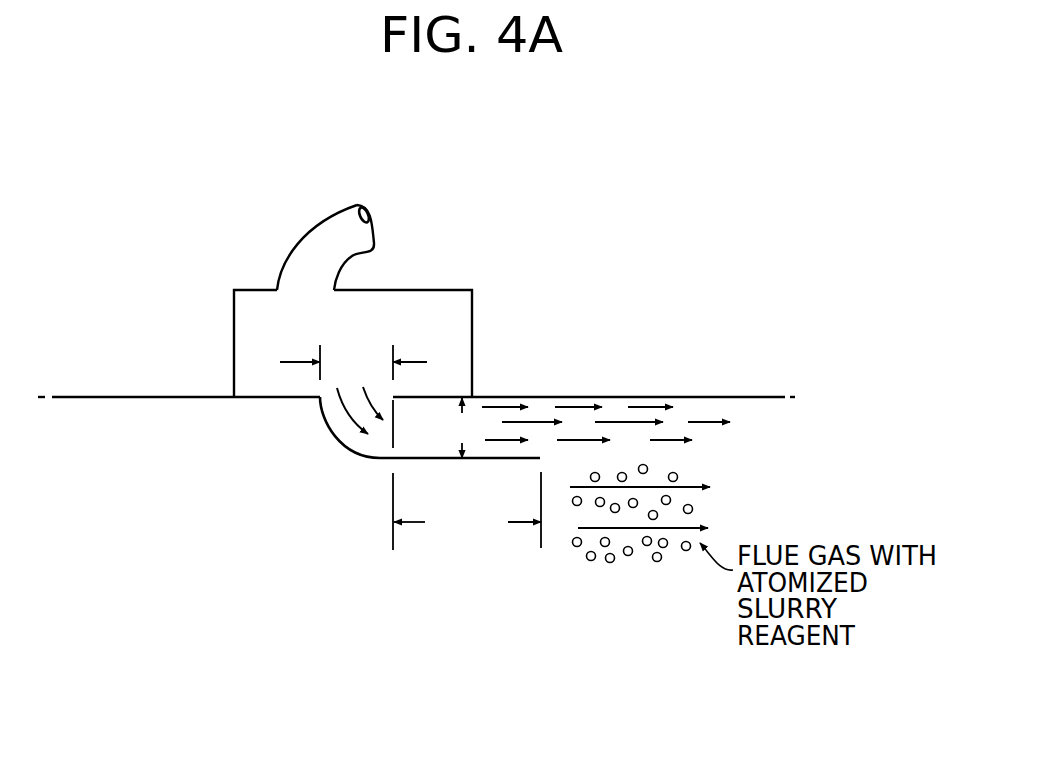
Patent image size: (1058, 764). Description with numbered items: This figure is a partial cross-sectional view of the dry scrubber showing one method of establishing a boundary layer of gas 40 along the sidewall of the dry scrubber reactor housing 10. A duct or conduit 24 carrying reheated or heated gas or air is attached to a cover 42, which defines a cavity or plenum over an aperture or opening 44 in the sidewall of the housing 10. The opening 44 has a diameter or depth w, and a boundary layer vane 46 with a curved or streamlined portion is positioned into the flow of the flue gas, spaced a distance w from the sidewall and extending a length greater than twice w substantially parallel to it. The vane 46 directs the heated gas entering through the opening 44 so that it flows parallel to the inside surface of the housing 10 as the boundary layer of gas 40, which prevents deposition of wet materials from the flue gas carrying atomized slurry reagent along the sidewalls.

The dry scrubber reactor housing 10 is at (713, 397).
The duct or conduit 24 is at (385, 225).
The cover 42 is at (485, 305).
The aperture or opening 44 is at (318, 390).
The boundary layer vane 46 is at (333, 448).
The boundary layer of gas 40 is at (708, 440).